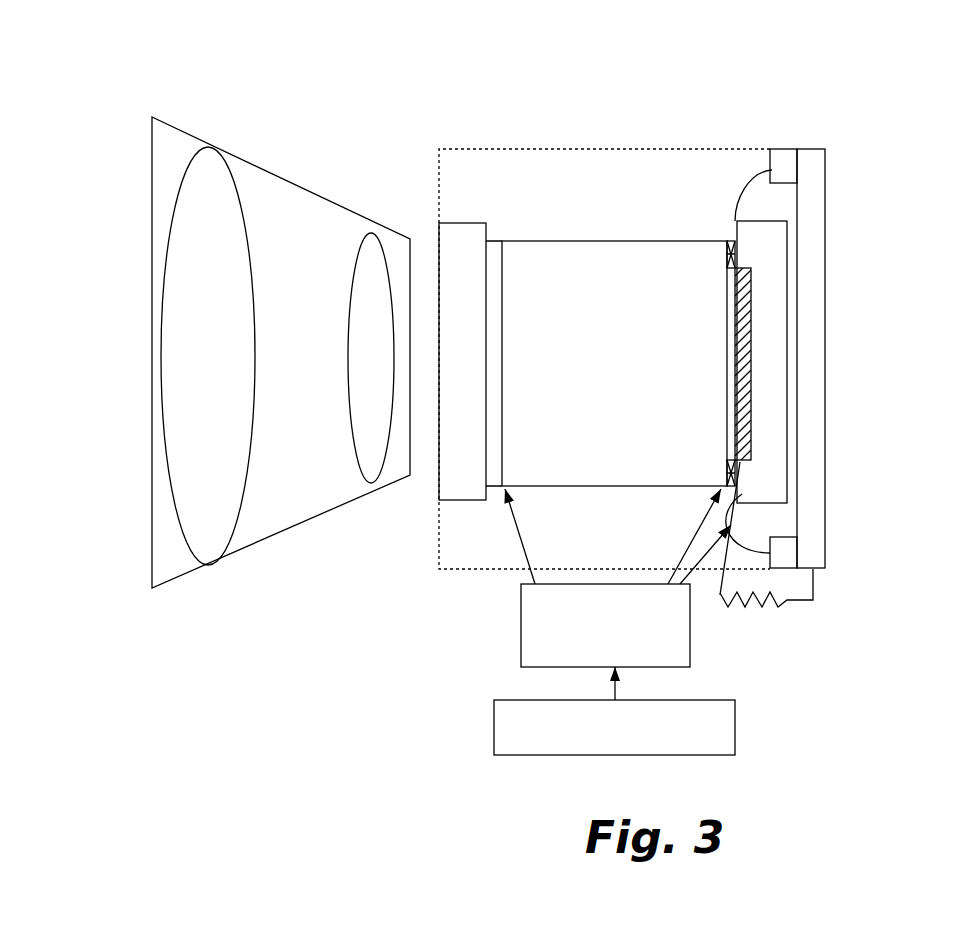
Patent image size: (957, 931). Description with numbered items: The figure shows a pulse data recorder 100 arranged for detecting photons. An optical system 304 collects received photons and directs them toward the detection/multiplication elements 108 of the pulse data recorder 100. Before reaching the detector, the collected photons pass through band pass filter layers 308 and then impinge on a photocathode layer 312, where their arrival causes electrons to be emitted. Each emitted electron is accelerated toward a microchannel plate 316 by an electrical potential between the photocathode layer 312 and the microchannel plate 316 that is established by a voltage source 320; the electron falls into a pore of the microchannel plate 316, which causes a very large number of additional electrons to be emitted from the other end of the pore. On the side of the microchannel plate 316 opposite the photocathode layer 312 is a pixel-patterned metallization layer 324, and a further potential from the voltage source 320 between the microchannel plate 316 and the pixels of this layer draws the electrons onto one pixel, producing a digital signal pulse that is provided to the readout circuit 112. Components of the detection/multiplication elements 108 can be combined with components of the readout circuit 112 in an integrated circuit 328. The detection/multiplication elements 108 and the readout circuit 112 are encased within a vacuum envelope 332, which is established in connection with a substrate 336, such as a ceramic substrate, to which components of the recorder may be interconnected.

The pulse data recorder 100 is at (487, 98).
The detection/multiplication elements 108 is at (521, 149).
The readout circuit 112 is at (778, 220).
The optical system 304 is at (270, 174).
The band pass filter layers 308 is at (458, 222).
The photocathode layer 312 is at (490, 240).
The microchannel plate 316 is at (610, 241).
The voltage source 320 is at (691, 643).
The pixel-patterned metallization layer 324 is at (751, 422).
The integrated circuit 328 is at (775, 313).
The vacuum envelope 332 is at (752, 149).
The substrate 336 is at (813, 536).